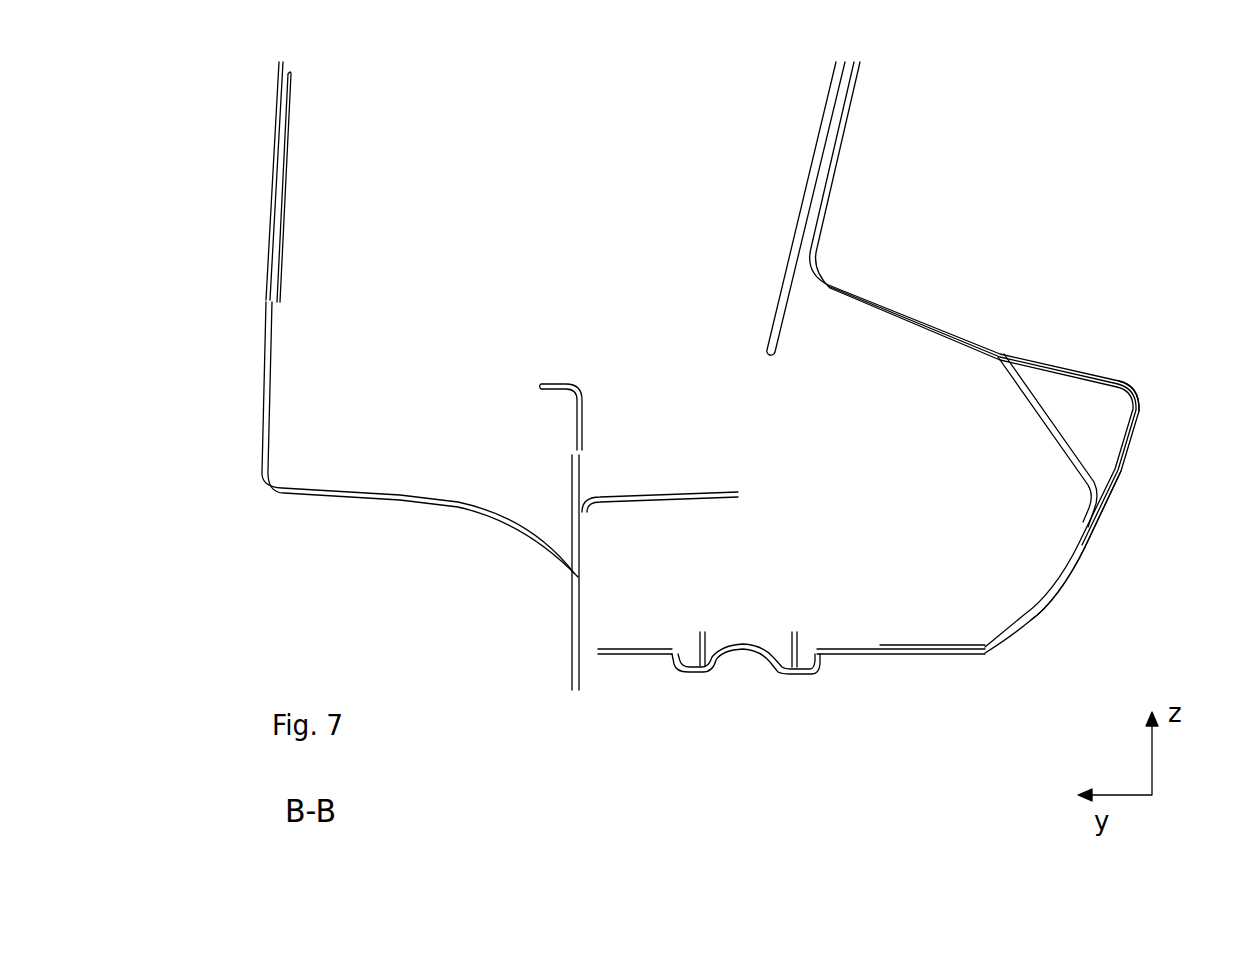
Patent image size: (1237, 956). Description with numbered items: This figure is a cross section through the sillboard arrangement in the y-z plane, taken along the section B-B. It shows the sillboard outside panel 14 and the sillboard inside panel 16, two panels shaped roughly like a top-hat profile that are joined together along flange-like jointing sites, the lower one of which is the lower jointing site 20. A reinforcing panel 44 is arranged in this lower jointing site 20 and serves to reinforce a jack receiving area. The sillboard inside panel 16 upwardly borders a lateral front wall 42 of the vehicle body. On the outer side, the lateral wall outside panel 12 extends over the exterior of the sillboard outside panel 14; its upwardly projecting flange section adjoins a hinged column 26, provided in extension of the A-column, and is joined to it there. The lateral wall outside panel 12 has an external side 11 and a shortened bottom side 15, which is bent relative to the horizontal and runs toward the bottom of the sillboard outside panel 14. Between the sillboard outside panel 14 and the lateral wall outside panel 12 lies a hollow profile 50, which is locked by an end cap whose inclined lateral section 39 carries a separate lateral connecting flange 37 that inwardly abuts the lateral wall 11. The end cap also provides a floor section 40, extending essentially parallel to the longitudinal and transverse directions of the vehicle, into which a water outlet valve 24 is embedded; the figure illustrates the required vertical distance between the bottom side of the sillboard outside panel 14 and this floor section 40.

The external side 11 is at (1113, 488).
The lateral wall outside panel 12 is at (940, 302).
The sillboard outside panel 14 is at (705, 497).
The bottom side 15 is at (937, 655).
The sillboard inside panel 16 is at (405, 497).
The lower jointing site 20 is at (573, 635).
The water outlet valve 24 is at (740, 655).
The hinged column 26 is at (795, 243).
The lateral connecting flange 37 is at (1078, 552).
The lateral section 39 is at (1060, 440).
The floor section 40 is at (620, 655).
The lateral front wall 42 is at (270, 232).
The reinforcing panel 44 is at (552, 385).
The hollow profile 50 is at (1093, 424).